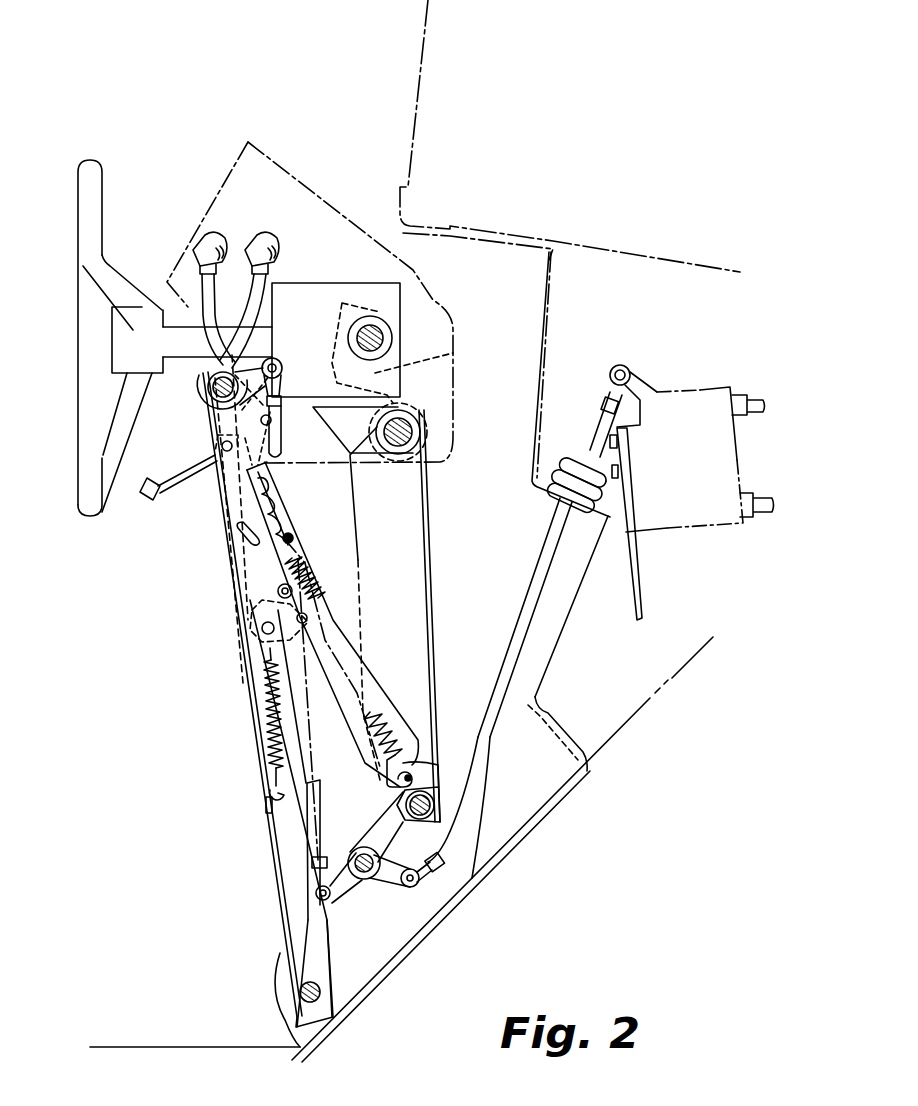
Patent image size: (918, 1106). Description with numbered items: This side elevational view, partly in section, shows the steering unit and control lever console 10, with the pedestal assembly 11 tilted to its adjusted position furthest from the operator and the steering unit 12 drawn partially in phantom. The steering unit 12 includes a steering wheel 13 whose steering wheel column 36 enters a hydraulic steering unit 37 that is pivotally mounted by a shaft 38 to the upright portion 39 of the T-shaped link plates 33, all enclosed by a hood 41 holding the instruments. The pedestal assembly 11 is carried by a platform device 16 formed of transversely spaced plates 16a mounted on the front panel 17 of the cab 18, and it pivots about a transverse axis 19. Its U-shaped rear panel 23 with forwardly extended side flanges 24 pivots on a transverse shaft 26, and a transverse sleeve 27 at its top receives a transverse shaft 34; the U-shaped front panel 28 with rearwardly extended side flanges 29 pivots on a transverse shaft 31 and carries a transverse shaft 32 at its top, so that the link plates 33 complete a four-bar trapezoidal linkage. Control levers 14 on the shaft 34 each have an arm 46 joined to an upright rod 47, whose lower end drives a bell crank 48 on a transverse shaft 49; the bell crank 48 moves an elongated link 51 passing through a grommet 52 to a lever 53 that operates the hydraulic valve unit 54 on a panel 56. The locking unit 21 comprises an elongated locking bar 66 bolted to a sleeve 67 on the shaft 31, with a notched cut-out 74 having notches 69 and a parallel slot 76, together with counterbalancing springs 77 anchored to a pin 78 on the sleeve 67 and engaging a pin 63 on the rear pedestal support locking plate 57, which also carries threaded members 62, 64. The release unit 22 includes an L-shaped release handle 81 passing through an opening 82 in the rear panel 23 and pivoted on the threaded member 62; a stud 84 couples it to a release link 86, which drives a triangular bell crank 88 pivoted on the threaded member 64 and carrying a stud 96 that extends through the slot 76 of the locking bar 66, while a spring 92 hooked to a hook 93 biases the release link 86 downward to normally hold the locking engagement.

The console 10 is at (128, 617).
The pedestal assembly 11 is at (230, 688).
The steering unit 12 is at (175, 320).
The steering wheel 13 is at (90, 158).
The control levers 14 is at (275, 232).
The platform device 16 is at (422, 932).
The plates 16a is at (400, 956).
The front panel 17 is at (490, 870).
The cab 18 is at (525, 822).
The transverse axis 19 is at (448, 807).
The locking unit 21 is at (350, 596).
The release unit 22 is at (200, 490).
The rear panel 23 is at (268, 848).
The side flanges 24 is at (287, 867).
The transverse shaft 26 is at (300, 988).
The transverse sleeve 27 is at (218, 391).
The front panel 28 is at (433, 590).
The side flanges 29 is at (421, 620).
The transverse shaft 31 is at (395, 800).
The transverse shaft 32 is at (405, 428).
The link plates 33 is at (440, 358).
The transverse shaft 34 is at (240, 400).
The steering wheel column 36 is at (172, 308).
The hydraulic steering unit 37 is at (296, 283).
The shaft 38 is at (372, 335).
The upright portion 39 is at (400, 268).
The hood 41 is at (262, 145).
The arm 46 is at (265, 360).
The rod 47 is at (281, 393).
The bell crank 48 is at (353, 890).
The transverse shaft 49 is at (376, 858).
The hydraulic cylinder 51 is at (503, 672).
The grommet 52 is at (580, 478).
The lever 53 is at (648, 382).
The hydraulic valve unit 54 is at (703, 387).
The panel 56 is at (640, 597).
The locking plate 57 is at (243, 577).
The threaded member 62 is at (272, 420).
The pin 63 is at (294, 538).
The threaded member 64 is at (307, 617).
The locking bar 66 is at (378, 680).
The sleeve 67 is at (445, 786).
The notches 69 is at (268, 484).
The notched cut-out 74 is at (279, 512).
The slot 76 is at (250, 540).
The counterbalancing springs 77 is at (316, 574).
The pin 78 is at (420, 774).
The release handle 81 is at (150, 495).
The opening 82 is at (212, 468).
The stud 84 is at (245, 436).
The release link 86 is at (253, 619).
The bell crank 88 is at (250, 632).
The spring 92 is at (265, 730).
The hook 93 is at (268, 795).
The pin 96 is at (278, 592).